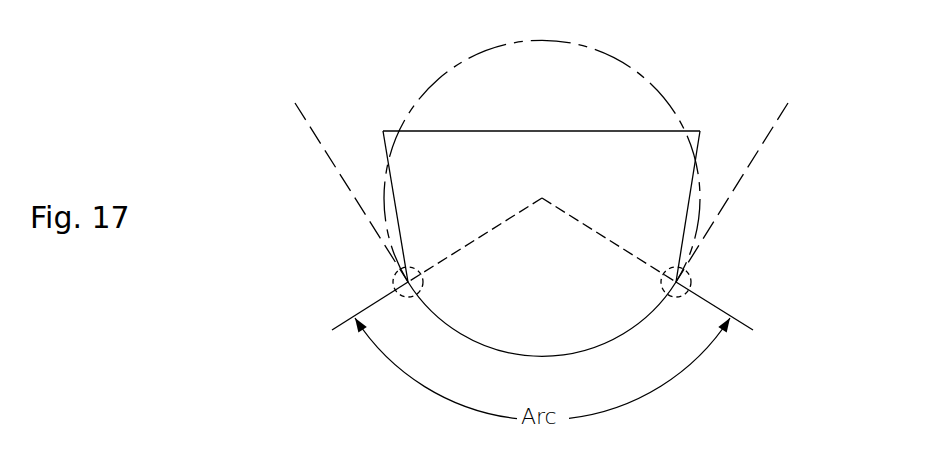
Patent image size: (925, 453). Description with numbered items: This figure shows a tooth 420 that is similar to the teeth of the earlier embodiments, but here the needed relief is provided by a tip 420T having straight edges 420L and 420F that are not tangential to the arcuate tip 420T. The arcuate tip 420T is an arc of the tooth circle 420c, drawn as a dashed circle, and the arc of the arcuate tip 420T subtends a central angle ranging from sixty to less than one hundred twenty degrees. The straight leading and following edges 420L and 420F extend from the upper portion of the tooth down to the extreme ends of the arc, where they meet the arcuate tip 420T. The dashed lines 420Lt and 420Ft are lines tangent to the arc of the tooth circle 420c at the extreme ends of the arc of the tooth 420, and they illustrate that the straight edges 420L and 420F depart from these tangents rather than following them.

The tooth 420 is at (753, 305).
The tooth circle 420c is at (506, 44).
The arcuate tip 420T is at (580, 355).
The straight following edge 420F is at (398, 226).
The straight leading edge 420L is at (687, 227).
The tangent line 420Ft is at (350, 195).
The tangent line 420Lt is at (730, 205).